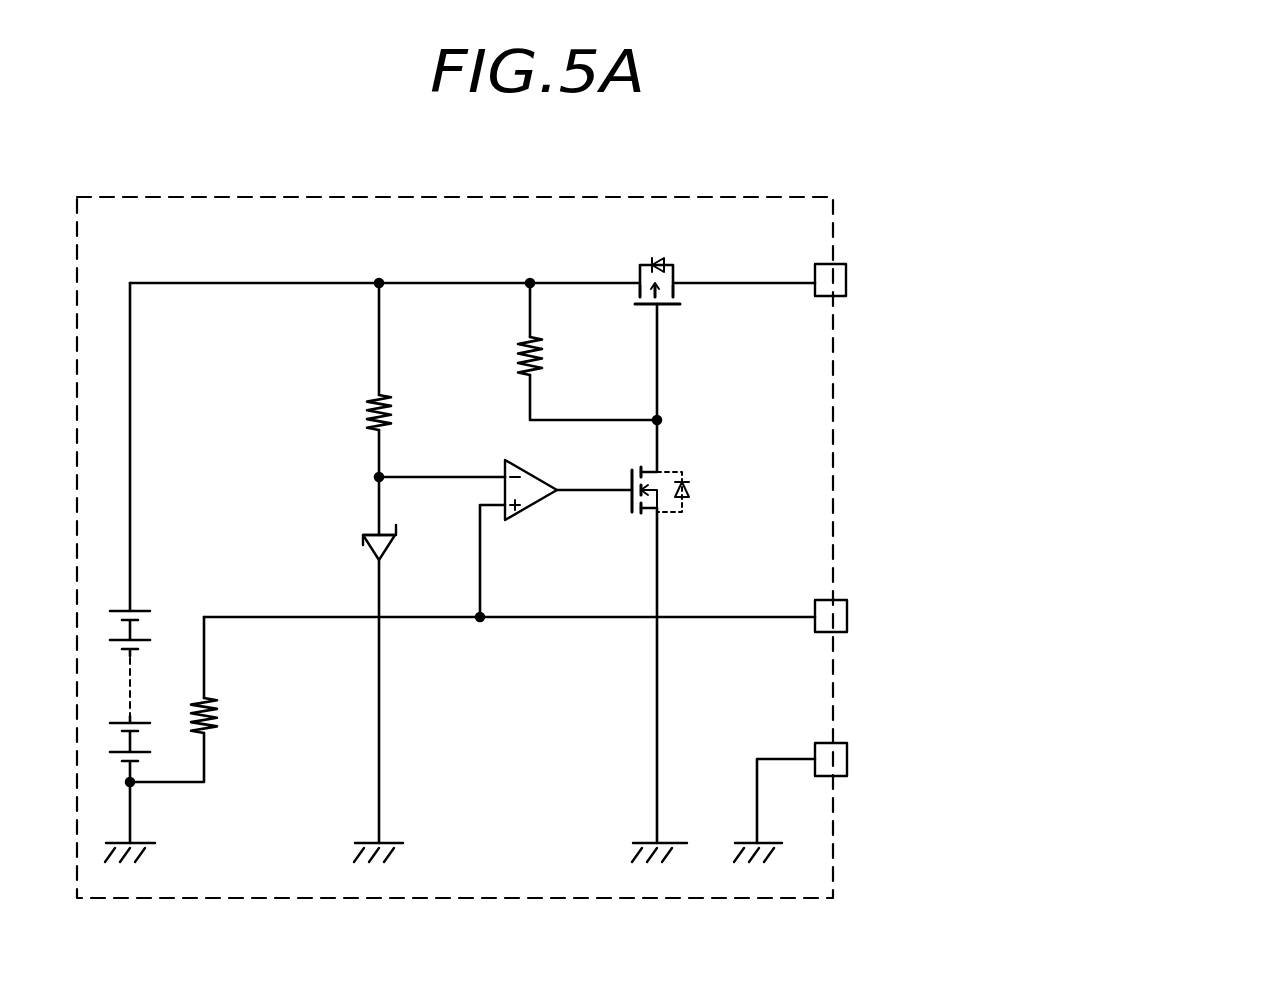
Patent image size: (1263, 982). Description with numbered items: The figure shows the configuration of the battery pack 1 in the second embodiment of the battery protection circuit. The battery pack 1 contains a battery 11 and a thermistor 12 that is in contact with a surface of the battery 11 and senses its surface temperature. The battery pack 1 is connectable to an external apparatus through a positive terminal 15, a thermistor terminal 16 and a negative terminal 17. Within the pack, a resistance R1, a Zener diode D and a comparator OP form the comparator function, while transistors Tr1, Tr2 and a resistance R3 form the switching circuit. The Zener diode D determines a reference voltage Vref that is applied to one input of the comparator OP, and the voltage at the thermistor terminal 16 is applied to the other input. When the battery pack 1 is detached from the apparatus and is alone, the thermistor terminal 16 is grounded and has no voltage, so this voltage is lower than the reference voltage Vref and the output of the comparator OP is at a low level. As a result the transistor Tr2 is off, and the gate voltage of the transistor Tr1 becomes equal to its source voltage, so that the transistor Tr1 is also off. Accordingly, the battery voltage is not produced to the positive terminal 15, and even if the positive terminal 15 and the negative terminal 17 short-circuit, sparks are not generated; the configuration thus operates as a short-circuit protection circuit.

The battery pack 1 is at (381, 194).
The battery 11 is at (148, 621).
The thermistor 12 is at (225, 735).
The positive terminal 15 is at (848, 284).
The thermistor terminal 16 is at (849, 620).
The negative terminal 17 is at (850, 758).
The resistance R1 is at (390, 403).
The resistance R3 is at (545, 351).
The Zener diode D is at (399, 547).
The comparator OP is at (555, 502).
The transistor Tr1 is at (660, 252).
The transistor Tr2 is at (697, 493).
The reference voltage Vref is at (396, 474).